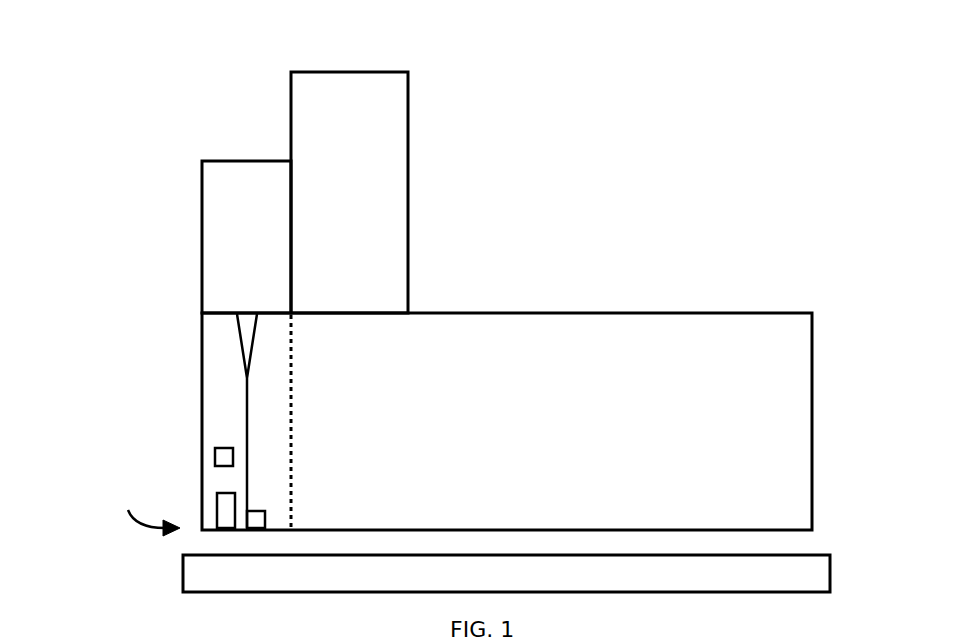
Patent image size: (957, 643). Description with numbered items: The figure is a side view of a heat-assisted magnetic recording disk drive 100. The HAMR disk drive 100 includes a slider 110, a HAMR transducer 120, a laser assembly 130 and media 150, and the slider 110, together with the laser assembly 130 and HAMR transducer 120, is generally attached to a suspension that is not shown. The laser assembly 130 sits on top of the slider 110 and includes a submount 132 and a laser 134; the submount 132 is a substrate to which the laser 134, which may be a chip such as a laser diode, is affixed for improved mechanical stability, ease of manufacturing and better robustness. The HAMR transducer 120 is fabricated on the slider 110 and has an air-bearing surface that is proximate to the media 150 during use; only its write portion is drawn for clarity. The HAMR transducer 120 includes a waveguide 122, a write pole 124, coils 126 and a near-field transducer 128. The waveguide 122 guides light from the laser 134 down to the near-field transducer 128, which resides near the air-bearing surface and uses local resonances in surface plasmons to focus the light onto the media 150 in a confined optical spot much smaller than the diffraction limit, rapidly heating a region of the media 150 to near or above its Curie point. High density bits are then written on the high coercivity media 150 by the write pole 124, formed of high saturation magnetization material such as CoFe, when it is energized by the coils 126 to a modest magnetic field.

The HAMR disk drive 100 is at (511, 49).
The slider 110 is at (812, 385).
The HAMR transducer 120 is at (292, 340).
The waveguide 122 is at (247, 407).
The write pole 124 is at (217, 493).
The coil(s) 126 is at (215, 447).
The near-field transducer (NFT) 128 is at (257, 530).
The laser assembly 130 is at (100, 212).
The submount 132 is at (408, 172).
The laser 134 is at (202, 195).
The media 150 is at (183, 590).